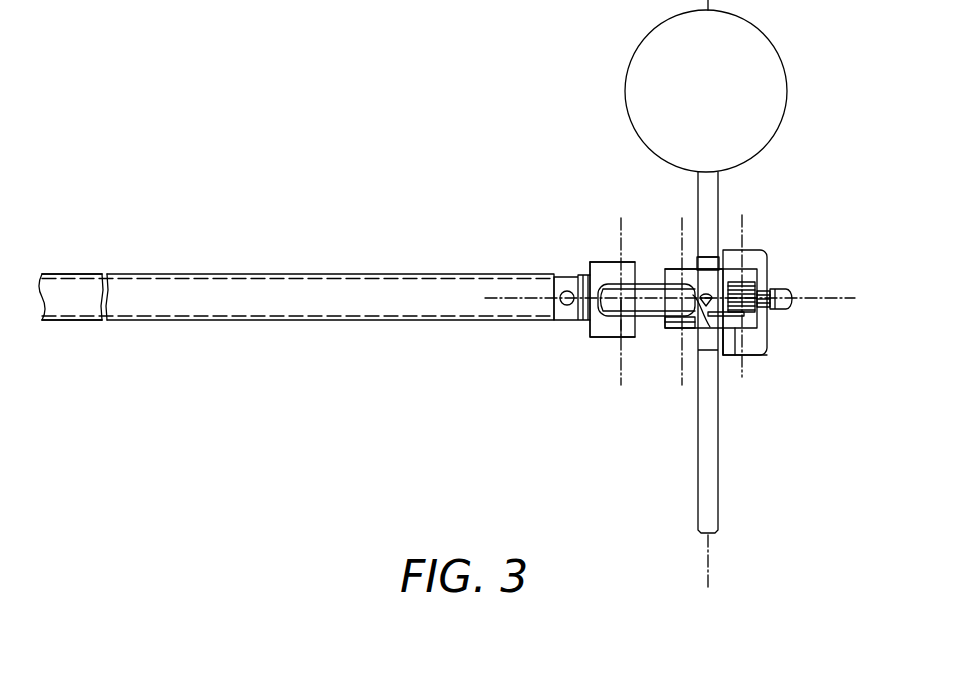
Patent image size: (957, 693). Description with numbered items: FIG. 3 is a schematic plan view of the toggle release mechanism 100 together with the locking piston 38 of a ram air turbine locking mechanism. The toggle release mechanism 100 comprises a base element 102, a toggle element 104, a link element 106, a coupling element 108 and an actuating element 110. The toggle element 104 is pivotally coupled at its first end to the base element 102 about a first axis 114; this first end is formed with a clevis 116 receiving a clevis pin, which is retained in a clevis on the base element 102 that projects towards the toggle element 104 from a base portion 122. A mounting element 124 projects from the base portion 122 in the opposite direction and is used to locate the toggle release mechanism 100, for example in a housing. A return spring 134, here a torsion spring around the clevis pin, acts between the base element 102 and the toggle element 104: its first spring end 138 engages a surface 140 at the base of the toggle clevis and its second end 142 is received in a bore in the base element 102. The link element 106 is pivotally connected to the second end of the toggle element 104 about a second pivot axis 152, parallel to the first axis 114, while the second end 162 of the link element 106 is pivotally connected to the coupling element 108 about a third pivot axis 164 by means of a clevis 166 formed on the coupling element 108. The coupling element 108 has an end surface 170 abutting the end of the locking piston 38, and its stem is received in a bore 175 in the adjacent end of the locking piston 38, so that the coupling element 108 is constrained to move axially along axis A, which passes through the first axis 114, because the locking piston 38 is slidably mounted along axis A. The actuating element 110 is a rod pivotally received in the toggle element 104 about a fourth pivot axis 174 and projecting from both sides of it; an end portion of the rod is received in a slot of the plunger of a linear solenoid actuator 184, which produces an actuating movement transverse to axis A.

The locking piston 38 is at (472, 312).
The toggle release mechanism 100 is at (822, 206).
The base element 102 is at (758, 353).
The toggle element 104 is at (721, 272).
The link element 106 is at (648, 308).
The coupling element 108 is at (610, 265).
The actuating element 110 is at (716, 183).
The first axis 114 is at (714, 226).
The clevis 116 is at (745, 263).
The base portion 122 is at (765, 280).
The mounting element 124 is at (792, 303).
The return spring 134 is at (745, 316).
The first spring end 138 is at (727, 354).
The surface 140 is at (703, 333).
The second end 142 is at (773, 294).
The second pivot axis 152 is at (682, 226).
The second end 162 is at (591, 262).
The third pivot axis 164 is at (619, 366).
The clevis 166 is at (626, 335).
The end surface 170 is at (590, 332).
The fourth pivot axis 174 is at (712, 565).
The bore 175 is at (361, 321).
The linear solenoid actuator 184 is at (786, 88).
The axis A is at (493, 298).